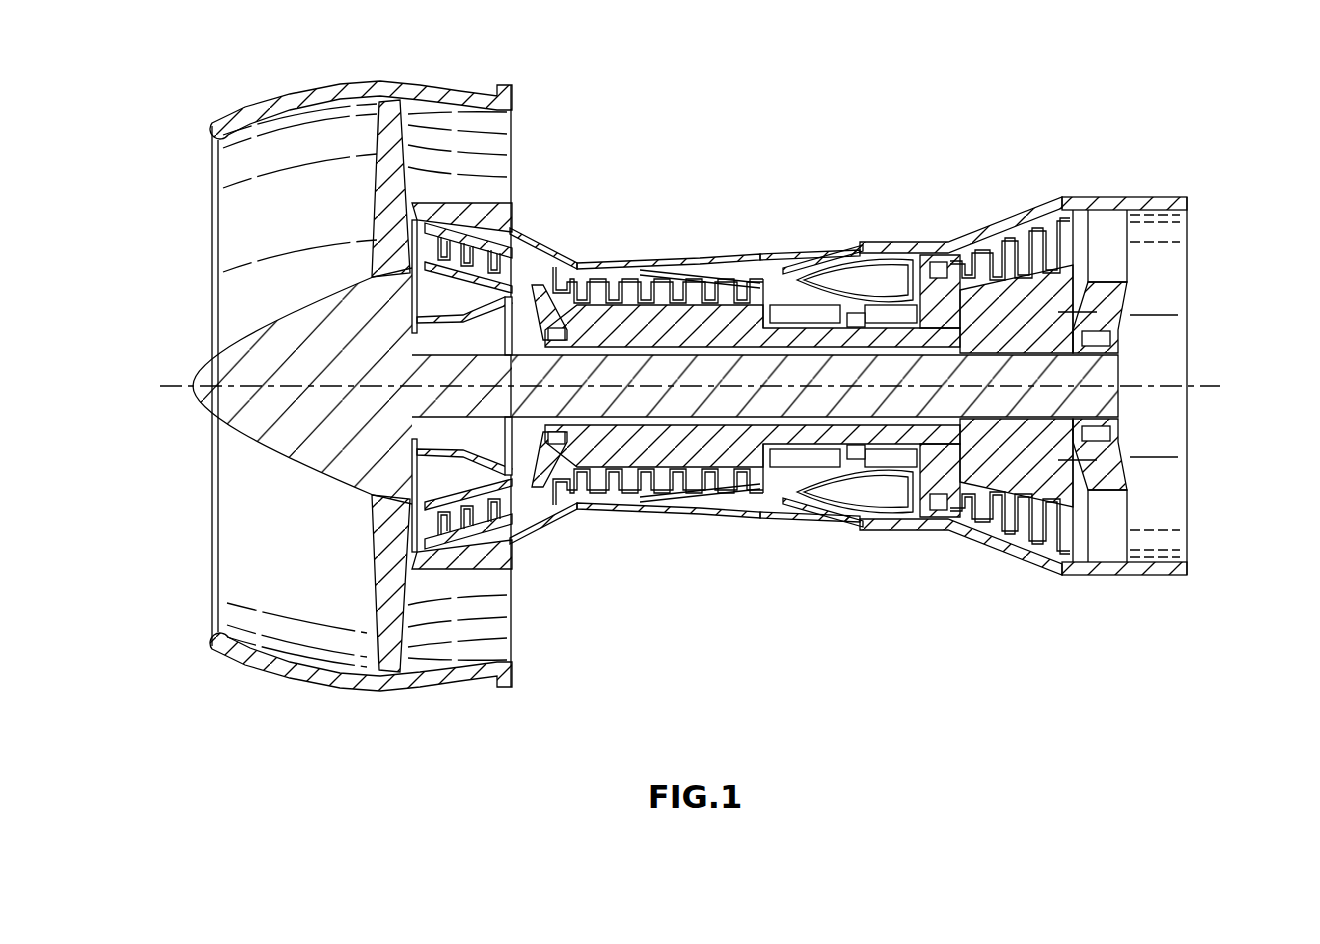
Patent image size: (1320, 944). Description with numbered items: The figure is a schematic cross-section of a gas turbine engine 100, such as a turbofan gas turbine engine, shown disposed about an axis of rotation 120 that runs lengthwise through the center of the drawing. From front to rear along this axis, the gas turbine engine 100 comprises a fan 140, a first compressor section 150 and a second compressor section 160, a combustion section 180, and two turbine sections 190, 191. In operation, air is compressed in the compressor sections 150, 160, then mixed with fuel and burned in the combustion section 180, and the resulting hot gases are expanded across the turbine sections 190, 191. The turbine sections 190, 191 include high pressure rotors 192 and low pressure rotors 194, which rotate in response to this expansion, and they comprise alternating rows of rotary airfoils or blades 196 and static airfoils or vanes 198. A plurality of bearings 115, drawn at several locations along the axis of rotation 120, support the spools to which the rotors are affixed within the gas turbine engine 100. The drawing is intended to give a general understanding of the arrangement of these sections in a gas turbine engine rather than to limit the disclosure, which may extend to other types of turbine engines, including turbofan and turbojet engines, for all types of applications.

The gas turbine engine 100 is at (693, 393).
The bearings 115 is at (558, 325).
The axis of rotation 120 is at (185, 382).
The fan 140 is at (407, 153).
The compressor section 150 is at (403, 697).
The compressor section 160 is at (575, 522).
The combustion section 180 is at (915, 552).
The turbine section 190 is at (965, 552).
The turbine section 191 is at (977, 575).
The high pressure rotors 192 is at (953, 262).
The low pressure rotors 194 is at (1120, 312).
The blades 196 is at (1010, 228).
The vanes 198 is at (1000, 240).